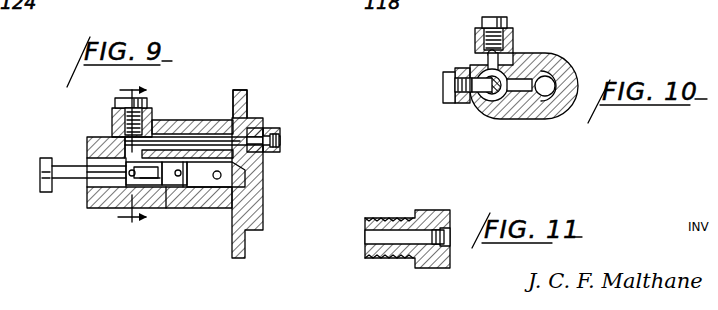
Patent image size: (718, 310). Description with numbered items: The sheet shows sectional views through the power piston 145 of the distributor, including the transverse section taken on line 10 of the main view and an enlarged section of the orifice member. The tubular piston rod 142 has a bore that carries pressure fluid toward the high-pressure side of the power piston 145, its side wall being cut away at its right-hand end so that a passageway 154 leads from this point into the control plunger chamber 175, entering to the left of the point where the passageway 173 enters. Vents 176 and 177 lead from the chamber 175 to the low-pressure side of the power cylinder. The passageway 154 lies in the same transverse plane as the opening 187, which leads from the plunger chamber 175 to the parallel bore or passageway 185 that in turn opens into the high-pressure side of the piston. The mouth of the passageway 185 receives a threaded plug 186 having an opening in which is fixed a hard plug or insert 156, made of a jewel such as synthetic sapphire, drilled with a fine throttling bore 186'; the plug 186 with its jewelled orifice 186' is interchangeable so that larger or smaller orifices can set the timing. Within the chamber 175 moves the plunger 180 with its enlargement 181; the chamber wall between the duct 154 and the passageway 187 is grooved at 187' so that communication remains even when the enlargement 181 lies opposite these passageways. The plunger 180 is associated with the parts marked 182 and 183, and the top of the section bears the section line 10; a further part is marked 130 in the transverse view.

In FIG. 9, the section line 10 is at (138, 156).
In FIG. 10, the ball valve 130 is at (505, 49).
In FIG. 10, the piston rod 142 is at (555, 103).
In FIG. 9, the power piston 145 is at (221, 212).
In FIG. 10, the power piston 145 is at (574, 64).
In FIG. 9, the passageway 154 is at (100, 208).
In FIG. 10, the passageway 154 is at (519, 97).
In FIG. 9, the hard plug or insert 156 is at (284, 150).
In FIG. 11, the hard plug or insert 156 is at (448, 246).
In FIG. 9, the passageway 173 is at (164, 122).
In FIG. 9, the control plunger chamber 175 is at (226, 120).
In FIG. 10, the control plunger chamber 175 is at (477, 111).
In FIG. 9, the vent 176 is at (245, 175).
In FIG. 9, the vent 177 is at (174, 208).
In FIG. 9, the plunger 180 is at (63, 165).
In FIG. 9, the enlargement 181 is at (85, 195).
In FIG. 9, the wall 182 is at (158, 208).
In FIG. 9, the rod 183 is at (40, 190).
In FIG. 9, the bore or passageway 185 is at (197, 140).
In FIG. 10, the bore or passageway 185 is at (488, 60).
In FIG. 9, the threaded plug 186 is at (286, 124).
In FIG. 11, the threaded plug 186 is at (407, 220).
In FIG. 9, the throttling bore 186' is at (306, 135).
In FIG. 11, the throttling bore 186' is at (470, 208).
In FIG. 9, the opening 187 is at (110, 117).
In FIG. 10, the opening 187 is at (435, 80).
In FIG. 10, the groove 187' is at (541, 57).